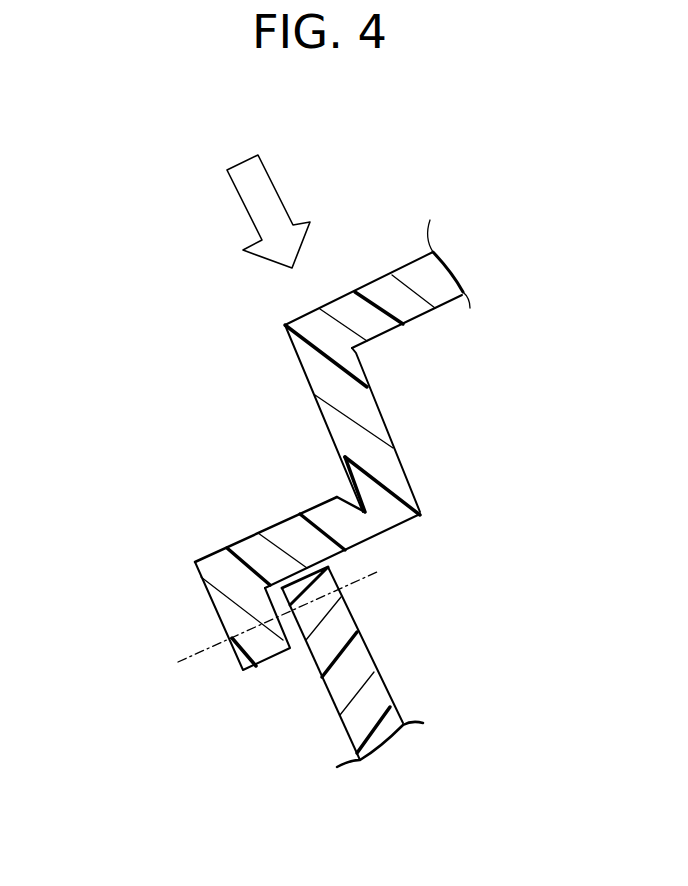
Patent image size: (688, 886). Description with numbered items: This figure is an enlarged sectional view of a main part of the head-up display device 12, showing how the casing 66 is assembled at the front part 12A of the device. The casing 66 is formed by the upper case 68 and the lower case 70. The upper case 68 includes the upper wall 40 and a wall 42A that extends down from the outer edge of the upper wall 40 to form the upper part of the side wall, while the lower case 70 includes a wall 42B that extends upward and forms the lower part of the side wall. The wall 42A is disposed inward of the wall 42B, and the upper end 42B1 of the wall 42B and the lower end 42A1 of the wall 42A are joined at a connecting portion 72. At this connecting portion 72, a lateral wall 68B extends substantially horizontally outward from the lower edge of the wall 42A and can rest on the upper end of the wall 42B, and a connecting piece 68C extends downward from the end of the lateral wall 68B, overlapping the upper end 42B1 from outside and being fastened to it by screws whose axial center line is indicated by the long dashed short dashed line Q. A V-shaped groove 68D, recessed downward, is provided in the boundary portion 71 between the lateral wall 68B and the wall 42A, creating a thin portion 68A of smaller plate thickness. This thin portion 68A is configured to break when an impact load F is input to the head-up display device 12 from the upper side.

The head-up display device 12 is at (68, 353).
The front part of the head-up display device 12A is at (352, 262).
The upper wall 40 is at (413, 268).
The casing 66 is at (220, 358).
The wall of the upper case 42A is at (328, 385).
The boundary portion 71 is at (342, 483).
The groove 68D is at (358, 495).
The thin portion 68A is at (373, 522).
The upper case 68 is at (178, 452).
The lateral wall 68B is at (255, 543).
The connecting portion 72 is at (203, 535).
The connecting piece 68C is at (227, 587).
The lower end of the wall 42A 42A1 is at (228, 615).
The lower case 70 is at (257, 710).
The axial center line of the screws Q is at (192, 653).
The upper end of the wall 42B 42B1 is at (333, 570).
The wall of the lower case 42B is at (362, 720).
The impact load F is at (262, 178).